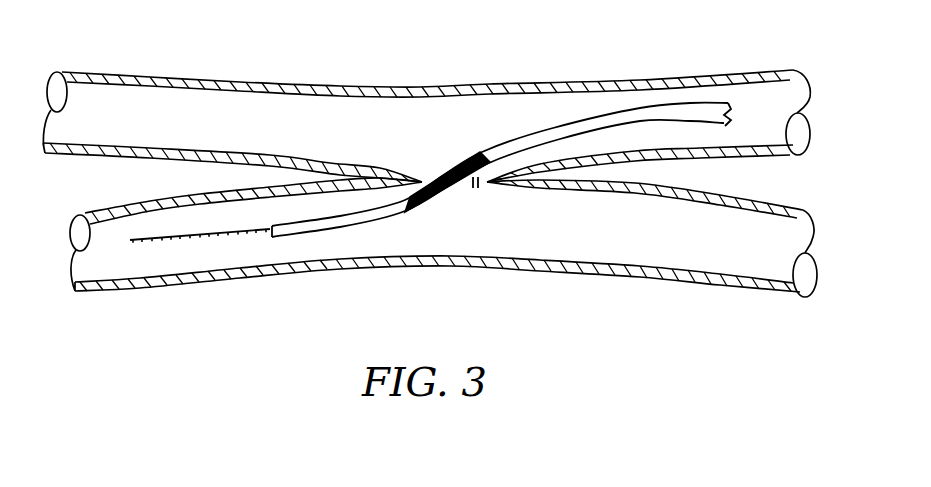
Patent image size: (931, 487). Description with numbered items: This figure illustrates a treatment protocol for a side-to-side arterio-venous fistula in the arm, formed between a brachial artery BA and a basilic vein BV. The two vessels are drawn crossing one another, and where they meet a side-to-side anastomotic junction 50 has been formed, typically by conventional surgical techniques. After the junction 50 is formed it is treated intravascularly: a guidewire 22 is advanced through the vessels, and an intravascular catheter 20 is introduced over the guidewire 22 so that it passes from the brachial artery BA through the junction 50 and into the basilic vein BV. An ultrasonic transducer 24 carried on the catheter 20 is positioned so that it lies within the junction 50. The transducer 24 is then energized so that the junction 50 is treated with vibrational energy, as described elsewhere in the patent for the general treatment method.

The intravascular catheter 20 is at (663, 115).
The guidewire 22 is at (198, 236).
The ultrasonic transducer 24 is at (445, 170).
The anastomotic junction 50 is at (469, 190).
The basilic vein BV is at (232, 82).
The brachial artery BA is at (147, 287).